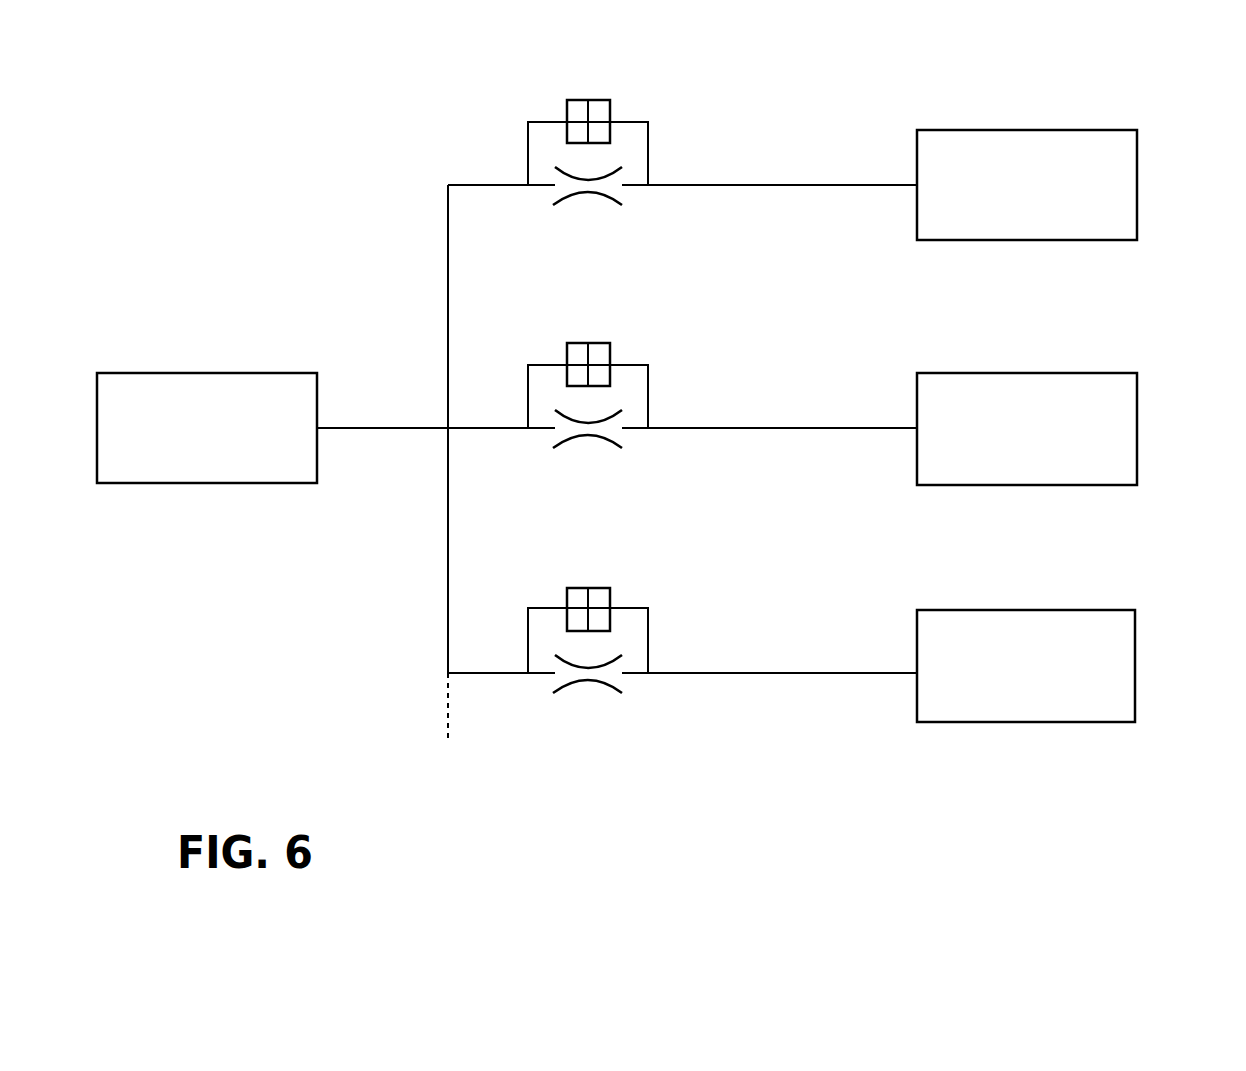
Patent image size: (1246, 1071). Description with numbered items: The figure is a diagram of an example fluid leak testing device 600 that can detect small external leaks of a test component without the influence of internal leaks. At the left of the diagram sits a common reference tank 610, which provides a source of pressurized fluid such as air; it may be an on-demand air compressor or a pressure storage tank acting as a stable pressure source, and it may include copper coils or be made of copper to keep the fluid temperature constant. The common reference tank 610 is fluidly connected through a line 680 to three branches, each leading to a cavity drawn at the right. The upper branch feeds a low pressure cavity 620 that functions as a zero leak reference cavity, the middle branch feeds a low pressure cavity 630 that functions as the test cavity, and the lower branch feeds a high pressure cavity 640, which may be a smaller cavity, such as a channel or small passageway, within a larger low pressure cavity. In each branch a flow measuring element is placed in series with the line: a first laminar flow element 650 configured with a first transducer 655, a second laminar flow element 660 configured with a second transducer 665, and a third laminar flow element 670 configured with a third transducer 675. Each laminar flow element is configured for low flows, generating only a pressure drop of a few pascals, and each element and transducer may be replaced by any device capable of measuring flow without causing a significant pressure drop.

The fluid leak testing device 600 is at (310, 204).
The common reference tank 610 is at (198, 372).
The low pressure cavity 620 is at (1137, 178).
The low pressure cavity 630 is at (1137, 428).
The high pressure cavity 640 is at (1135, 662).
The first laminar flow element 650 is at (590, 193).
The first transducer 655 is at (597, 100).
The second laminar flow element 660 is at (590, 435).
The second transducer 665 is at (597, 343).
The third laminar flow element 670 is at (590, 678).
The third transducer 675 is at (611, 597).
The line 680 is at (449, 318).